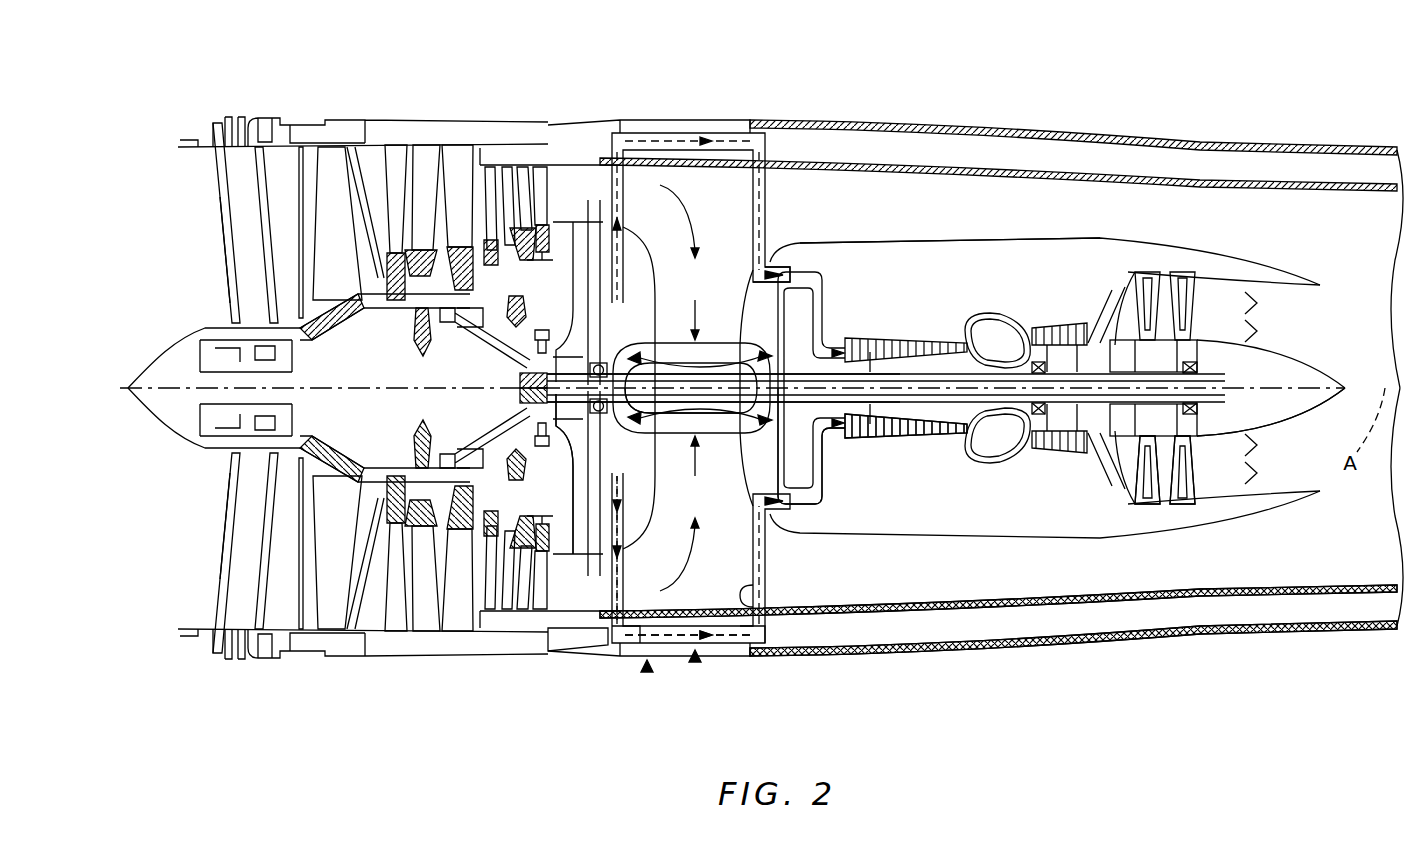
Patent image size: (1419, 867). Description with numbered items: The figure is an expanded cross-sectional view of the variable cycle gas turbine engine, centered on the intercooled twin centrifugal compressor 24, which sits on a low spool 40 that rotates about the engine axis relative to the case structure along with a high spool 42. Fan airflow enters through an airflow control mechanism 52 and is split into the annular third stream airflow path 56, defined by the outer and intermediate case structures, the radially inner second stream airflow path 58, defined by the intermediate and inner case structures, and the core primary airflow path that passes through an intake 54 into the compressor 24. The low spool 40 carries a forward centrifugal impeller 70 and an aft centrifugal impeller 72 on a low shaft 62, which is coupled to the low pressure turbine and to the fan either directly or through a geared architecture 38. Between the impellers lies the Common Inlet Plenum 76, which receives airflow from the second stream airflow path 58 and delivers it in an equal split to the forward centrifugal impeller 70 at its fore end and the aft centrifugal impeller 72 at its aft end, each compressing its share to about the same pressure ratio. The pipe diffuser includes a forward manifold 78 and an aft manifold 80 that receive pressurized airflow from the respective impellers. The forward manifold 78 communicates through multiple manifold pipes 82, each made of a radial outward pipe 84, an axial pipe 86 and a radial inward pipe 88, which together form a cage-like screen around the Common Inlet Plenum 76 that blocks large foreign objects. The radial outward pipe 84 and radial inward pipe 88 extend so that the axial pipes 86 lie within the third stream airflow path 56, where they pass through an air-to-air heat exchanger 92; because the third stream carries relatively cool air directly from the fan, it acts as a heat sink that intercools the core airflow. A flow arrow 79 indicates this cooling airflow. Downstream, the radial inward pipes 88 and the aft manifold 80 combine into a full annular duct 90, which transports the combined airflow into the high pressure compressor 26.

The intercooled twin centrifugal compressor 24 is at (790, 88).
The high pressure compressor 26 is at (907, 297).
The geared architecture 38 is at (518, 397).
The low spool 40 is at (1113, 430).
The high spool 42 is at (928, 402).
The airflow control mechanism 52 is at (563, 635).
The intake 54 is at (724, 275).
The third stream airflow path 56 is at (976, 640).
The second stream airflow path 58 is at (867, 596).
The low shaft 62 is at (1157, 440).
The forward centrifugal impeller 70 is at (643, 434).
The aft centrifugal impeller 72 is at (796, 445).
The Common Inlet Plenum 76 is at (673, 420).
The forward manifold 78 is at (640, 562).
The cooling air flow 79 is at (699, 660).
The aft manifold 80 is at (737, 540).
The manifold pipes 82 is at (647, 668).
The radial outward pipe 84 is at (633, 630).
The axial pipe 86 is at (740, 640).
The radial inward pipe 88 is at (777, 613).
The full annular duct 90 is at (822, 507).
The air-to-air heat exchanger 92 is at (672, 642).